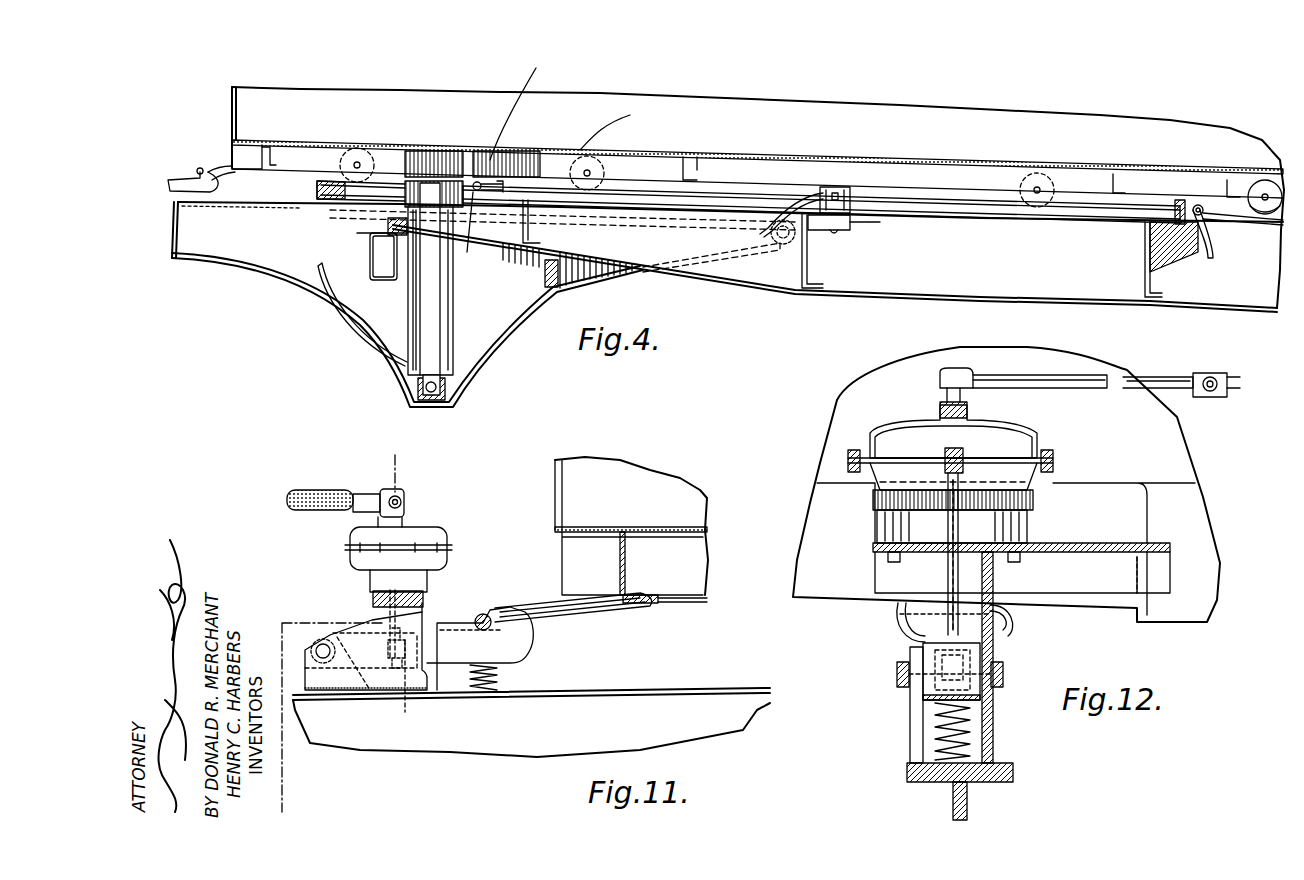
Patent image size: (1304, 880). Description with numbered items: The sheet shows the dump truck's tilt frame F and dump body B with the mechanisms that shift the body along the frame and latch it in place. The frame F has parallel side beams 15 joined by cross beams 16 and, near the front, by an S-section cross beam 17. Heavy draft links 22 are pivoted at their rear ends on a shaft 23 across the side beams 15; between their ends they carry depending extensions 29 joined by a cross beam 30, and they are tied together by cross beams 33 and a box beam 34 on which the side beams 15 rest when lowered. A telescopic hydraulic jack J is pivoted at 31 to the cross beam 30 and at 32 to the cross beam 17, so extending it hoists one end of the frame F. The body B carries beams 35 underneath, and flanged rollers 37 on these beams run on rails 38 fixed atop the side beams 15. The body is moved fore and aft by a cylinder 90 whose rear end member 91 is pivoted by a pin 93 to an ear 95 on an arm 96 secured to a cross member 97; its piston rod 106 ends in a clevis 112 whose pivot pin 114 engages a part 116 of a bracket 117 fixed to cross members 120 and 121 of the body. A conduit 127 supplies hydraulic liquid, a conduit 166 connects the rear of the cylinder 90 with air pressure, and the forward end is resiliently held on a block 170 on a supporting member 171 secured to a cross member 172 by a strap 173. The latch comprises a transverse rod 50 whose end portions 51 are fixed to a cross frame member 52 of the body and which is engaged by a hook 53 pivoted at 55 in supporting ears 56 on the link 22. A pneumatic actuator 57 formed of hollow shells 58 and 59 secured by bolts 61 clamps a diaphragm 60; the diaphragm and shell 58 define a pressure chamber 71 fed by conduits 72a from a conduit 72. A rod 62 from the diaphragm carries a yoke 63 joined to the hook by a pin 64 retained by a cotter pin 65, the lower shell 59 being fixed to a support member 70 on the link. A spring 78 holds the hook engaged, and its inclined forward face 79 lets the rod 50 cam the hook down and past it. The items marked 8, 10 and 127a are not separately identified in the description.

In FIG. 4, the dump body B is at (769, 93).
In FIG. 11, the dump body B is at (632, 478).
In FIG. 12, the dump body B is at (839, 394).
In FIG. 4, the pivot pin 8 is at (481, 174).
In FIG. 4, the tubular rail 10 is at (853, 175).
In FIG. 4, the side beams 15 is at (958, 290).
In FIG. 4, the cross beams 16 is at (530, 232).
In FIG. 4, the cross beam 17 is at (385, 226).
In FIG. 4, the links 22 is at (200, 232).
In FIG. 11, the links 22 is at (533, 745).
In FIG. 12, the links 22 is at (968, 803).
In FIG. 4, the shaft 23 is at (770, 250).
In FIG. 4, the depending extensions 29 is at (395, 370).
In FIG. 4, the cross beam 30 is at (455, 383).
In FIG. 4, the pivot 31 is at (433, 400).
In FIG. 4, the pivot connection 32 is at (432, 180).
In FIG. 4, the cross beams 33 is at (543, 280).
In FIG. 4, the box beam 34 is at (382, 282).
In FIG. 4, the parallel beams 35 is at (250, 152).
In FIG. 11, the parallel beams 35 is at (690, 602).
In FIG. 12, the parallel beams 35 is at (1150, 512).
In FIG. 4, the flanged roller 37 is at (355, 183).
In FIG. 4, the rails 38 is at (322, 187).
In FIG. 4, the transverse rod 50 is at (192, 164).
In FIG. 11, the transverse rod 50 is at (482, 614).
In FIG. 12, the transverse rod 50 is at (900, 632).
In FIG. 4, the end portions 51 is at (235, 175).
In FIG. 11, the end portions 51 is at (616, 612).
In FIG. 12, the end portions 51 is at (897, 614).
In FIG. 11, the cross frame member 52 is at (626, 567).
In FIG. 12, the cross frame member 52 is at (820, 498).
In FIG. 4, the hook 53 is at (170, 186).
In FIG. 11, the hook 53 is at (470, 608).
In FIG. 12, the hook 53 is at (923, 696).
In FIG. 11, the pivot 55 is at (322, 644).
In FIG. 12, the pivot 55 is at (897, 675).
In FIG. 11, the supporting ears 56 is at (342, 680).
In FIG. 12, the supporting ears 56 is at (910, 733).
In FIG. 11, the pneumatic means 57 is at (447, 518).
In FIG. 12, the pneumatic means 57 is at (894, 412).
In FIG. 11, the hollow shell 58 is at (450, 535).
In FIG. 12, the hollow shell 58 is at (1028, 440).
In FIG. 11, the hollow shell 59 is at (372, 562).
In FIG. 12, the hollow shell 59 is at (1035, 490).
In FIG. 12, the diaphragm 60 is at (920, 470).
In FIG. 12, the bolts 61 is at (848, 455).
In FIG. 11, the rod 62 is at (372, 606).
In FIG. 12, the rod 62 is at (947, 570).
In FIG. 11, the yoke 63 is at (432, 665).
In FIG. 12, the yoke 63 is at (923, 648).
In FIG. 11, the pin 64 is at (411, 686).
In FIG. 12, the pin 64 is at (1003, 674).
In FIG. 11, the cotter pin 65 is at (388, 650).
In FIG. 12, the cotter pin 65 is at (992, 650).
In FIG. 11, the support member 70 is at (424, 600).
In FIG. 12, the support member 70 is at (1100, 543).
In FIG. 12, the pressure chamber 71 is at (1000, 445).
In FIG. 11, the conduit 72 is at (305, 505).
In FIG. 12, the conduit 72 is at (1210, 372).
In FIG. 11, the conduits 72a is at (400, 497).
In FIG. 12, the conduits 72a is at (1090, 373).
In FIG. 11, the spring 78 is at (500, 675).
In FIG. 12, the spring 78 is at (935, 738).
In FIG. 11, the forward face 79 is at (528, 606).
In FIG. 4, the cylinder 90 is at (1007, 222).
In FIG. 4, the end member 91 is at (1182, 200).
In FIG. 4, the pivot pin 93 is at (1198, 204).
In FIG. 4, the ear 95 is at (1222, 220).
In FIG. 4, the arm 96 is at (1182, 258).
In FIG. 4, the cross member 97 is at (1146, 288).
In FIG. 4, the piston rod 106 is at (703, 206).
In FIG. 4, the clevis 112 is at (492, 200).
In FIG. 4, the pivot pin 114 is at (482, 232).
In FIG. 4, the part 116 is at (515, 160).
In FIG. 4, the bracket 117 is at (529, 104).
In FIG. 4, the cross member 120 is at (405, 152).
In FIG. 4, the cross member 121 is at (622, 123).
In FIG. 4, the conduit 127 is at (755, 234).
In FIG. 4, the hose 127a is at (345, 270).
In FIG. 4, the conduit 166 is at (1212, 252).
In FIG. 4, the block 170 is at (884, 223).
In FIG. 4, the supporting member 171 is at (816, 228).
In FIG. 4, the cross member 172 is at (812, 272).
In FIG. 4, the strap 173 is at (840, 186).
In FIG. 4, the hydraulic jack J is at (440, 327).
In FIG. 4, the frame F is at (785, 288).